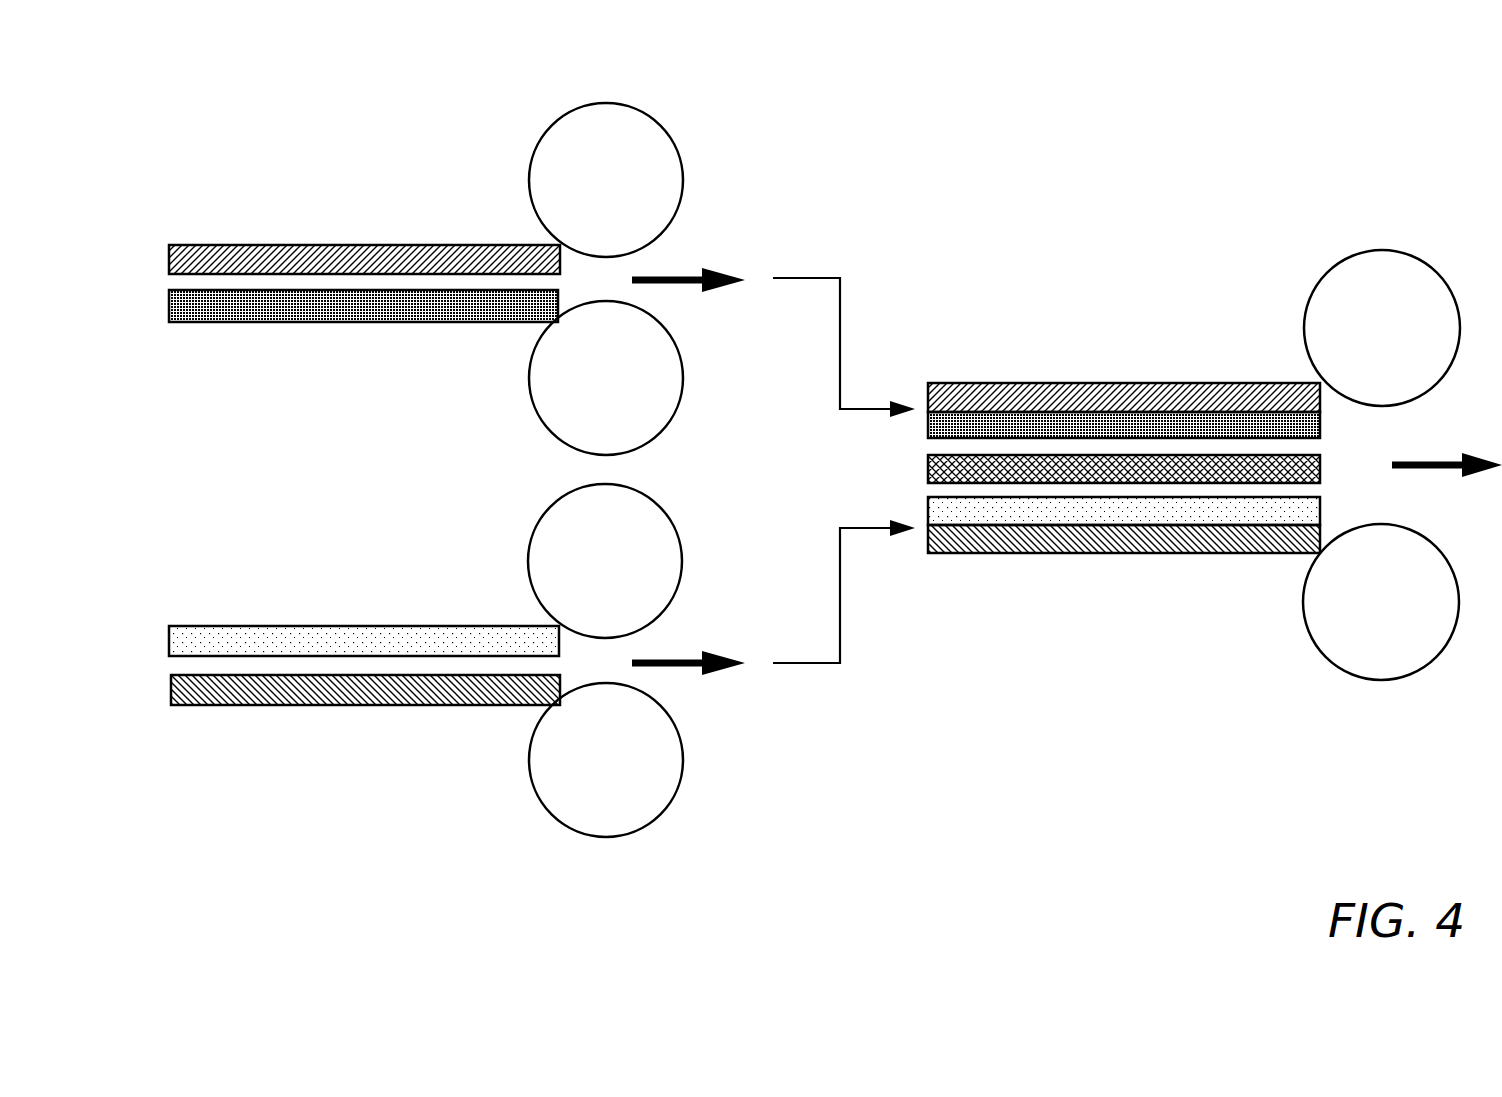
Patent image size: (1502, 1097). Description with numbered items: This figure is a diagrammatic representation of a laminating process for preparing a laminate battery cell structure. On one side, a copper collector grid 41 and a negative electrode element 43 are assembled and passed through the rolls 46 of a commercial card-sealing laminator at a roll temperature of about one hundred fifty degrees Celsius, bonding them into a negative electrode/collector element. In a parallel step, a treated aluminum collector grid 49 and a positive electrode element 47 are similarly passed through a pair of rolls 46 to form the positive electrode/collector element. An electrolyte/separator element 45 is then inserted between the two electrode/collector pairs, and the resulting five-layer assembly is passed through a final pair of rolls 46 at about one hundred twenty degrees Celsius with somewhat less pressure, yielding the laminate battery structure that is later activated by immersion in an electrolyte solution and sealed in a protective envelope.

The copper collector grid 41 is at (323, 702).
The negative electrode element 43 is at (215, 642).
The electrolyte/separator element 45 is at (928, 462).
The rolls 46 is at (630, 173).
The positive electrode element 47 is at (260, 303).
The treated aluminum collector grid 49 is at (303, 258).